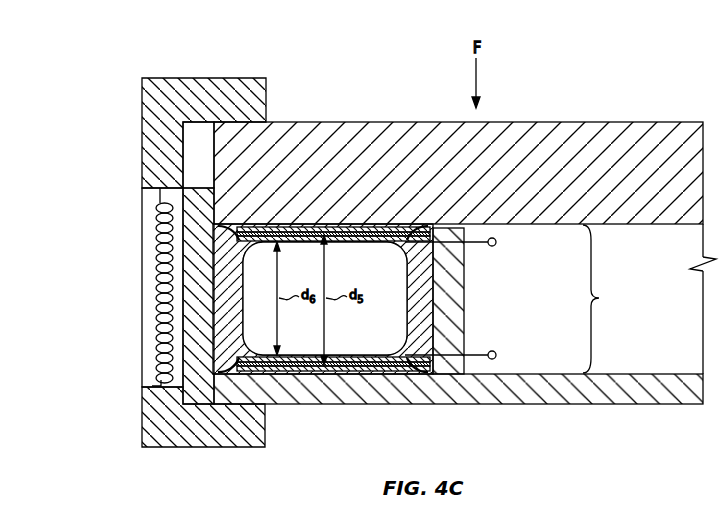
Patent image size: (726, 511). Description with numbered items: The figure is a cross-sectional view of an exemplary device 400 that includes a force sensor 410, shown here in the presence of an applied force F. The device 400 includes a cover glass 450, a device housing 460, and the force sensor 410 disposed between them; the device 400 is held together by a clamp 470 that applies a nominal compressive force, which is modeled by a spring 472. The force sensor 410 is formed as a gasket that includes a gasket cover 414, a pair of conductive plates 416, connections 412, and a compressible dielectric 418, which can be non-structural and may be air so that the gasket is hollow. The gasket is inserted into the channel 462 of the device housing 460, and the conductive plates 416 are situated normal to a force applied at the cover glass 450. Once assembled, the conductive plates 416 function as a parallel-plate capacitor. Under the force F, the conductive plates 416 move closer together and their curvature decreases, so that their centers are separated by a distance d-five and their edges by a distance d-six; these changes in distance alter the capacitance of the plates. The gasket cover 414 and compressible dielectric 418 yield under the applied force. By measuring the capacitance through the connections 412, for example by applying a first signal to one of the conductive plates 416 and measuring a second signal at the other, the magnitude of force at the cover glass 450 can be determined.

The device 400 is at (169, 58).
The force sensor 410 is at (606, 299).
The connections 412 is at (496, 242).
The gasket cover 414 is at (223, 374).
The conductive plates 416 is at (287, 224).
The compressible dielectric 418 is at (354, 334).
The cover glass 450 is at (535, 122).
The device housing 460 is at (449, 395).
The channel 462 is at (452, 228).
The clamp 470 is at (142, 119).
The spring 472 is at (152, 353).